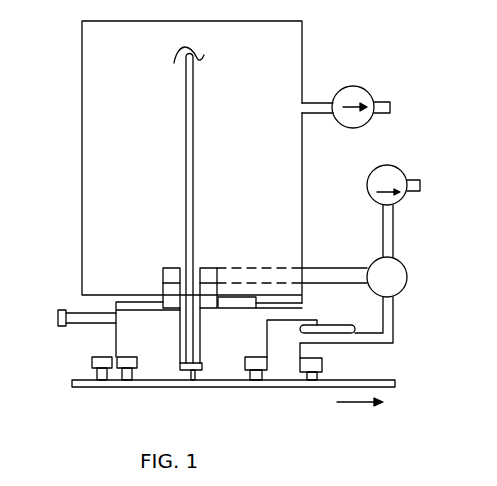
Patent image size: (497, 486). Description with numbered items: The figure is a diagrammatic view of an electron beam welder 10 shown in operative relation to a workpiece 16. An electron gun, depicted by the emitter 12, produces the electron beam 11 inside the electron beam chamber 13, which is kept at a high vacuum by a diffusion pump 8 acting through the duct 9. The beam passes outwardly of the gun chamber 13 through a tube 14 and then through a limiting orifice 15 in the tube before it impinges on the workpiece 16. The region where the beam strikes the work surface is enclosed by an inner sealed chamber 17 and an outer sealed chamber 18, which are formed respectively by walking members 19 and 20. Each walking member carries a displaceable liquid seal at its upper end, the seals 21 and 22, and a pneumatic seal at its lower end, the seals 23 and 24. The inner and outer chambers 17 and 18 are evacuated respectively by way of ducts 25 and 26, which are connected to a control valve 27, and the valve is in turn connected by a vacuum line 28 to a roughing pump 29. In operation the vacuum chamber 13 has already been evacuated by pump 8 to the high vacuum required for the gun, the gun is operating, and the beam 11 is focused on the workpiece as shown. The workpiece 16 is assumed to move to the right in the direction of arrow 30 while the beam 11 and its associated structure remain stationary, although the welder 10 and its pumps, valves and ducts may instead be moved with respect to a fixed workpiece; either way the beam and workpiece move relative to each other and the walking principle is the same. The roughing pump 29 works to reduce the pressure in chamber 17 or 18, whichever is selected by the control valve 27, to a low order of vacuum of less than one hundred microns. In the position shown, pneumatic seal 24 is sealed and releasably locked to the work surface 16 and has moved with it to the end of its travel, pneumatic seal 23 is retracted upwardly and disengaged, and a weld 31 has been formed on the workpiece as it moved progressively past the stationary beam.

The diffusion pump 8 is at (367, 93).
The duct 9 is at (314, 103).
The electron beam welder 10 is at (310, 172).
The electron beam 11 is at (194, 200).
The emitter 12 is at (204, 58).
The electron beam chamber 13 is at (80, 160).
The tube 14 is at (178, 283).
The limiting orifice 15 is at (202, 364).
The workpiece 16 is at (73, 376).
The inner sealed chamber 17 is at (162, 351).
The outer sealed chamber 18 is at (284, 388).
The walking member 19 is at (262, 352).
The walking member 20 is at (304, 322).
The displaceable liquid seal 21 is at (346, 325).
The displaceable liquid seal 22 is at (232, 308).
The pneumatic seal 23 is at (129, 384).
The pneumatic seal 24 is at (106, 384).
The duct 25 is at (360, 268).
The duct 26 is at (355, 343).
The control valve 27 is at (404, 267).
The vacuum line 28 is at (383, 232).
The roughing pump 29 is at (370, 197).
The arrow 30 is at (352, 403).
The weld 31 is at (199, 380).